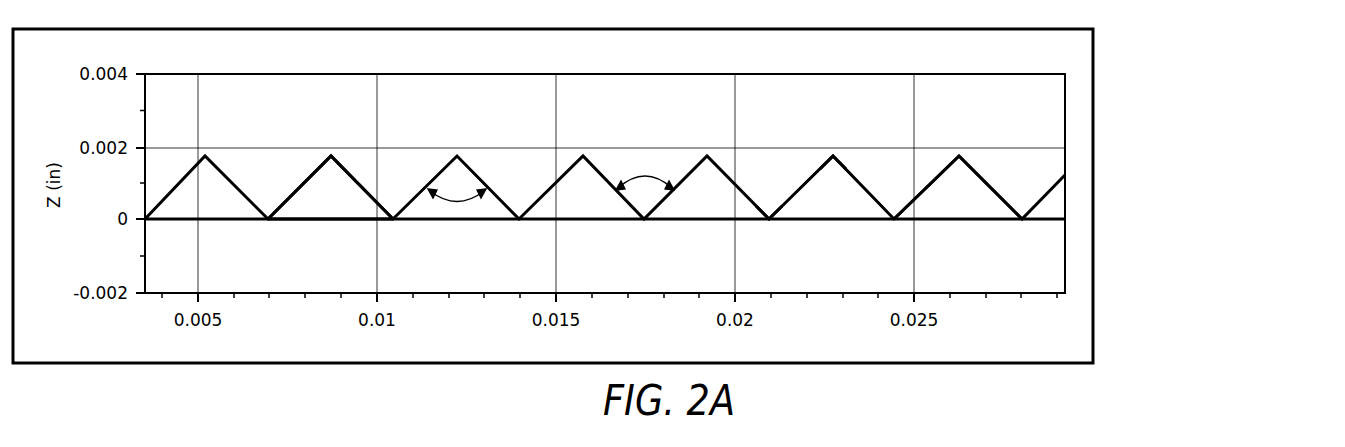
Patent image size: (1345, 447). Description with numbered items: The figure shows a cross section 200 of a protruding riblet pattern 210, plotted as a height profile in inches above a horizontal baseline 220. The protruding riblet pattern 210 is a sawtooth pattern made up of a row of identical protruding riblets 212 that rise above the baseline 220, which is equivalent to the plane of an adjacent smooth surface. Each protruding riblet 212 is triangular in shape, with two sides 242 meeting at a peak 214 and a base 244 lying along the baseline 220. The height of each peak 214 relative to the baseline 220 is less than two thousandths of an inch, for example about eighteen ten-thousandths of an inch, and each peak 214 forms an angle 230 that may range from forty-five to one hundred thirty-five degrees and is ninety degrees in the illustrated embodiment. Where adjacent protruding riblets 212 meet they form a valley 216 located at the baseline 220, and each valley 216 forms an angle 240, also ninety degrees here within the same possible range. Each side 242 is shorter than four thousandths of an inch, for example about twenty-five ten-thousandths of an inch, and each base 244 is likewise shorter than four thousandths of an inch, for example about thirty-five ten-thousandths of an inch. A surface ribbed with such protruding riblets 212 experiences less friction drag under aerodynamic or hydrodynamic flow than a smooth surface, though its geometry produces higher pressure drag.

The cross section 200 is at (1121, 50).
The protruding riblet pattern 210 is at (982, 175).
The protruding riblet 212 is at (968, 191).
The peak 214 is at (833, 156).
The valley 216 is at (770, 220).
The baseline 220 is at (594, 220).
The angle 230 is at (456, 201).
The angle 240 is at (645, 175).
The side 242 is at (352, 173).
The base 244 is at (314, 213).